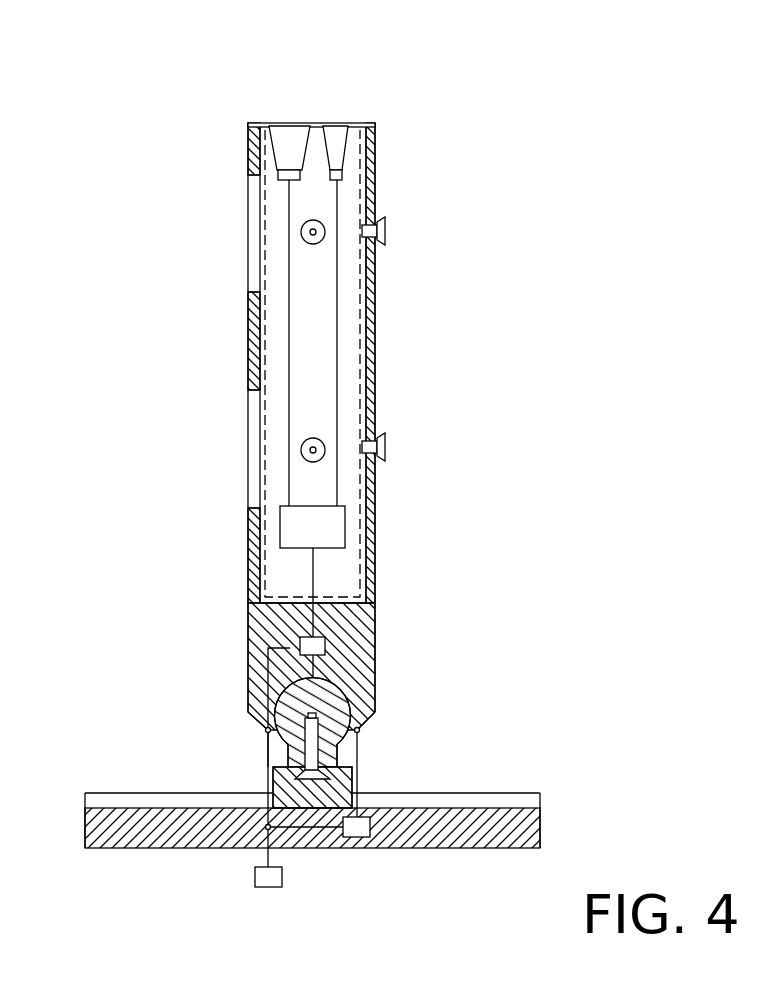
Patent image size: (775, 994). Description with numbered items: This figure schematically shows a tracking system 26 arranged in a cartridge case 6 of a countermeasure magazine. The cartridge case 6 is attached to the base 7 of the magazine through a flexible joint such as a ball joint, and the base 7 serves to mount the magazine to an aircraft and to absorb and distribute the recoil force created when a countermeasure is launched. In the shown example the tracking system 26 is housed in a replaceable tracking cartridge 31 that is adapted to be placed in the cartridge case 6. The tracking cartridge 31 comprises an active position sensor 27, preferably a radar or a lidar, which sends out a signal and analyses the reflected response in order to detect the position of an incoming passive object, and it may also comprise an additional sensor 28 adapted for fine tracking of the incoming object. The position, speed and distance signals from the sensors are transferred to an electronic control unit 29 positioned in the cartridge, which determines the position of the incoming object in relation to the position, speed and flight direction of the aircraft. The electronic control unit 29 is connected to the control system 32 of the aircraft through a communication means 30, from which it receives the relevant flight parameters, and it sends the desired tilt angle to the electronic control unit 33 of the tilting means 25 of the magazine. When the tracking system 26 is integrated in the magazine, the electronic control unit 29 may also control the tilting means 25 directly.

The cartridge case 6 is at (372, 339).
The base 7 is at (480, 830).
The tilting means 25 is at (378, 755).
The tracking system 26 is at (394, 106).
The active position sensor 27 is at (275, 150).
The additional sensor 28 is at (348, 150).
The electronic control unit 29 is at (346, 527).
The communication means 30 is at (325, 648).
The tracking cartridge 31 is at (327, 102).
The control system 32 is at (265, 887).
The electronic control unit of the tilting means 33 is at (355, 837).